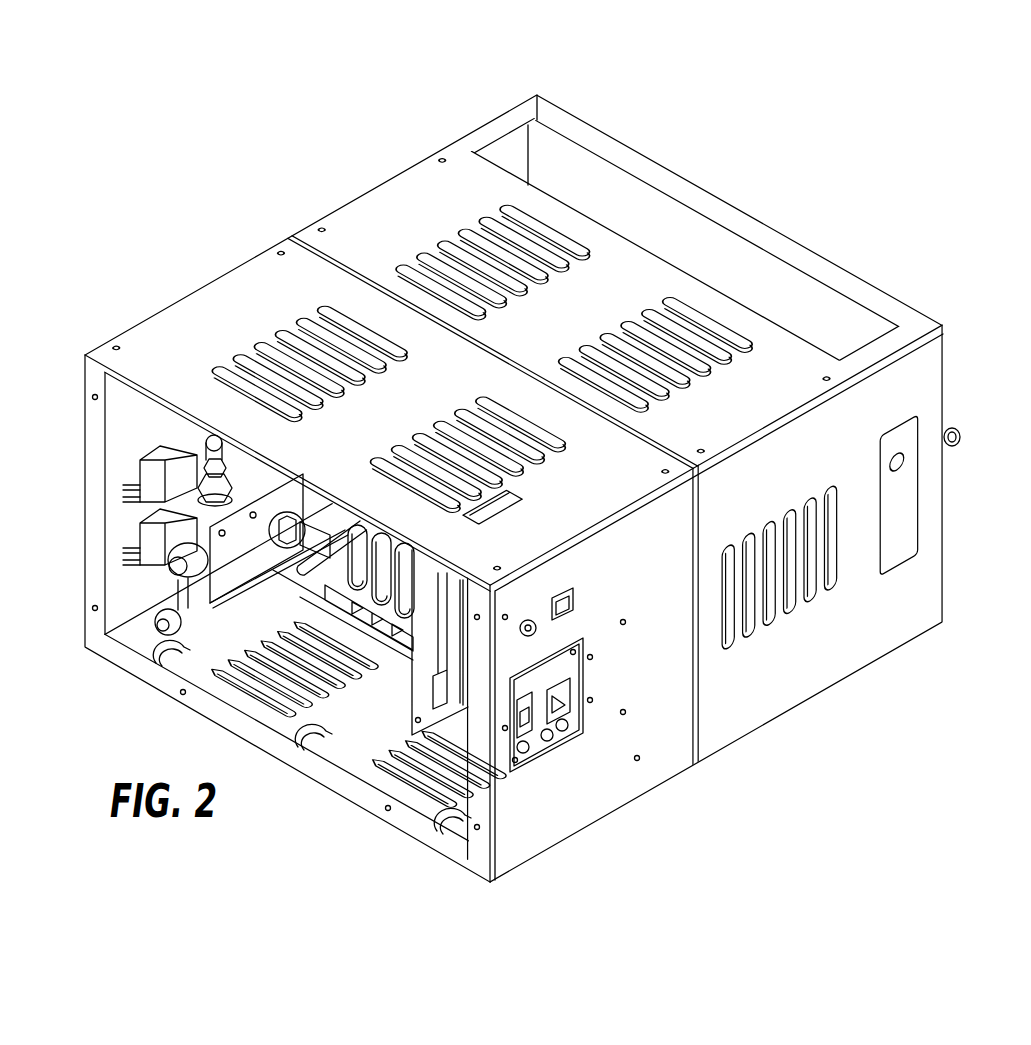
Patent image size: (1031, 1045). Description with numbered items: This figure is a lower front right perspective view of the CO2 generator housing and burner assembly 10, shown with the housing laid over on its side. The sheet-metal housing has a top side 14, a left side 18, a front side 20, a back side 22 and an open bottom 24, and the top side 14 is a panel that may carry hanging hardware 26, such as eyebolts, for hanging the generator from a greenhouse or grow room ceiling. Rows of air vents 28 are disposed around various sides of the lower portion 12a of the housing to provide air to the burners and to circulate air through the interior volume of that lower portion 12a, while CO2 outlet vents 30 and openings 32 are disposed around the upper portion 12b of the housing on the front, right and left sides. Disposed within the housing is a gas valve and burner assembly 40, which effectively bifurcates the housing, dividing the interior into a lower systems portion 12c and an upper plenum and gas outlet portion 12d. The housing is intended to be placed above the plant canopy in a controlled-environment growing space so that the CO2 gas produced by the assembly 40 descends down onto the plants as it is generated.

The generator housing and burner assembly 10 is at (822, 193).
The lower portion of the housing 12a is at (655, 772).
The upper portion of the housing 12b is at (750, 712).
The lower systems portion 12c is at (376, 788).
The upper plenum and gas outlet portion 12d is at (840, 348).
The top side 14 is at (619, 185).
The left side 18 is at (127, 432).
The front side 20 is at (355, 215).
The back side 22 is at (538, 868).
The open bottom 24 is at (360, 754).
The hanging hardware 26 is at (960, 445).
The air vents 28 is at (292, 330).
The CO2 outlet vents 30 is at (470, 215).
The openings 32 is at (666, 215).
The gas valve and burner assembly 40 is at (232, 585).